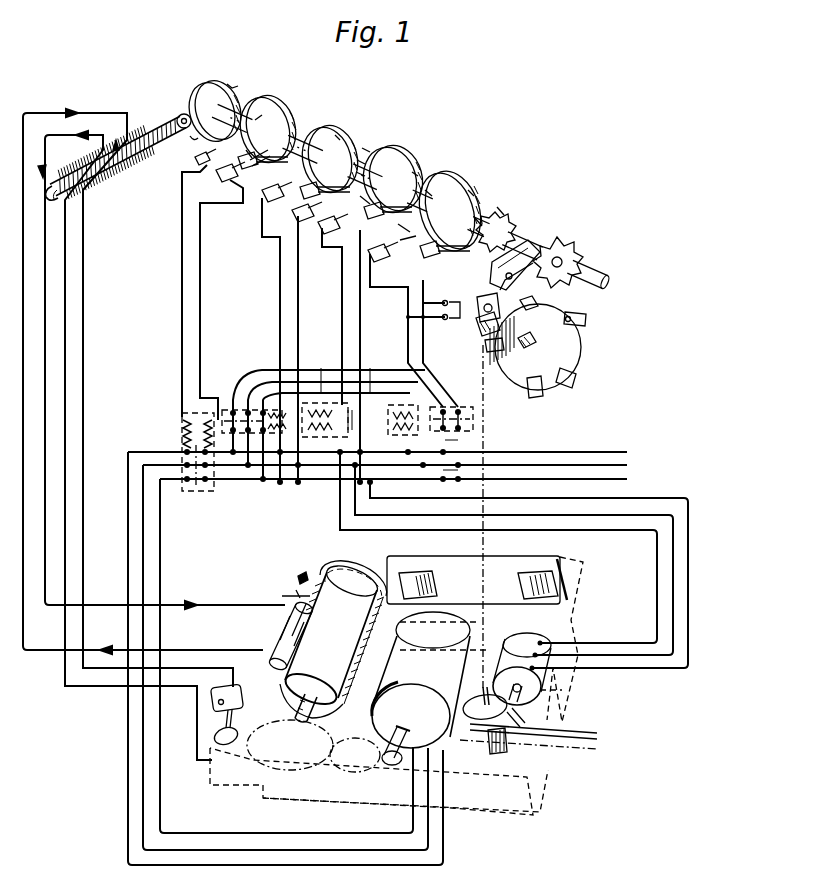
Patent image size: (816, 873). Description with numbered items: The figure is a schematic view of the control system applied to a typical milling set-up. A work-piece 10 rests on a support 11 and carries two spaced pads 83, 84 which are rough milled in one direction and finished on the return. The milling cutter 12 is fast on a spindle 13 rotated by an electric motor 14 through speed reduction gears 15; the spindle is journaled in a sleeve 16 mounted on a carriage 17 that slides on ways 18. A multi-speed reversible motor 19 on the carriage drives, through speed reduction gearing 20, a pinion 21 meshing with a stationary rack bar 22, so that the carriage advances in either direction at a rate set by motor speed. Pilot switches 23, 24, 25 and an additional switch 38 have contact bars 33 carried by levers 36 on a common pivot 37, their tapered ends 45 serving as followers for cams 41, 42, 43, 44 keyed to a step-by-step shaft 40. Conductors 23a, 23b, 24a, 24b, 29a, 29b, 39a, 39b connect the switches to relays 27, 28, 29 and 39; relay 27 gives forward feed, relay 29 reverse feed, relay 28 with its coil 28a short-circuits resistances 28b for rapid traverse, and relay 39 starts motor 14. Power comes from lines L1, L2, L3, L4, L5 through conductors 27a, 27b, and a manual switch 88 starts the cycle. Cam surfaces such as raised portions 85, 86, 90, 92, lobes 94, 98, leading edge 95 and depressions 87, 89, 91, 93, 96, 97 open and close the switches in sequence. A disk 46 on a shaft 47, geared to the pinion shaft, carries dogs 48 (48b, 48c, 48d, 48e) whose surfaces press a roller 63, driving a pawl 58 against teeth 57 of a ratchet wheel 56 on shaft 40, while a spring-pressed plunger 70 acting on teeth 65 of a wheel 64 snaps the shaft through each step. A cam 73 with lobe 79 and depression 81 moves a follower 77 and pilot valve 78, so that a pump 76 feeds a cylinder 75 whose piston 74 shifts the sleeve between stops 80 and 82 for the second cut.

The work-piece 10 is at (570, 600).
The support 11 is at (580, 632).
The milling cutter 12 is at (348, 565).
The spindle 13 is at (312, 716).
The electric motor 14 is at (380, 688).
The speed reduction gears 15 is at (340, 790).
The sleeve 16 is at (360, 648).
The carriage 17 is at (480, 815).
The ways 18 is at (572, 693).
The multi-speed reversible electric motor 19 is at (515, 636).
The speed reduction gearing 20 is at (490, 740).
The pinion 21 is at (488, 748).
The stationary rack bar 22 is at (552, 748).
The switch 23 is at (370, 258).
The conductor 23a is at (423, 350).
The conductor 23b is at (423, 300).
The speed control switch 24 is at (322, 232).
The conductor 24a is at (342, 298).
The conductor 24b is at (345, 356).
The switch 25 is at (262, 200).
The relay 27 is at (473, 410).
The conductor 27a is at (440, 462).
The conductor 27b is at (462, 442).
The relay 28 is at (388, 400).
The relay coil 28a is at (345, 435).
The resistances 28b is at (399, 428).
The relay 29 is at (230, 410).
The conductor 29a is at (298, 305).
The conductor 29b is at (280, 284).
The bars 33 is at (220, 182).
The levers 36 is at (297, 220).
The common pivot 37 is at (188, 130).
The switch 38 is at (196, 165).
The relay 39 is at (182, 432).
The conductor 39a is at (200, 340).
The conductor 39b is at (182, 340).
The shaft 40 is at (292, 142).
The cam 41 is at (462, 180).
The cam 42 is at (404, 164).
The cam 43 is at (355, 138).
The cam 44 is at (280, 112).
The tapered ends 45 is at (268, 170).
The circular disk 46 is at (582, 349).
The shaft 47 is at (527, 348).
The dogs 48 is at (482, 330).
The dog 48b is at (490, 352).
The dog 48c is at (528, 394).
The dog 48d is at (587, 378).
The dog 48e is at (586, 318).
The wheel 56 is at (574, 242).
The teeth 57 is at (566, 238).
The pawl 58 is at (537, 304).
The roller 63 is at (511, 340).
The wheel 64 is at (512, 216).
The teeth 65 is at (508, 208).
The plunger 70 is at (492, 272).
The cam 73 is at (222, 82).
The piston 74 is at (282, 632).
The hydraulic cylinder 75 is at (270, 650).
The pump 76 is at (228, 696).
The follower 77 is at (157, 125).
The pilot valve 78 is at (92, 150).
The lobe 79 is at (236, 92).
The stop 80 is at (284, 598).
The cam depression 81 is at (192, 82).
The stop 82 is at (298, 577).
The pad 83 is at (438, 584).
The pad 84 is at (518, 586).
The raised portion 85 is at (405, 237).
The raised portion 86 is at (362, 148).
The depressed surface 87 is at (362, 200).
The manually operable switch 88 is at (446, 298).
The depression 89 is at (478, 214).
The raised portion 90 is at (247, 150).
The depression 91 is at (268, 115).
The raised portion 92 is at (405, 223).
The depression 93 is at (429, 184).
The lobe 94 is at (415, 170).
The leading edge 95 is at (474, 190).
The depression 96 is at (336, 130).
The depression 97 is at (366, 162).
The cam lobe 98 is at (366, 163).
The power line L1 is at (600, 453).
The line L2 is at (603, 466).
The line L3 is at (603, 482).
The line L4 is at (322, 373).
The line L5 is at (370, 365).